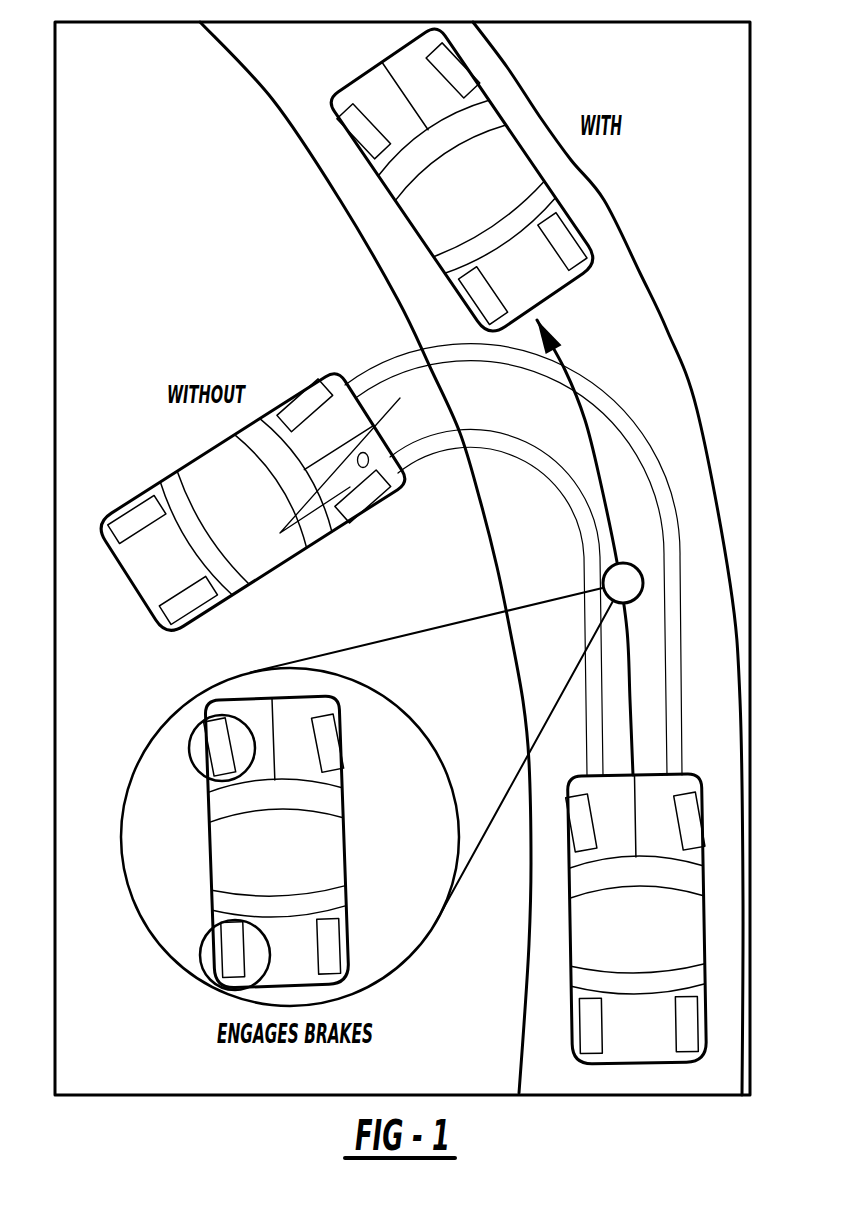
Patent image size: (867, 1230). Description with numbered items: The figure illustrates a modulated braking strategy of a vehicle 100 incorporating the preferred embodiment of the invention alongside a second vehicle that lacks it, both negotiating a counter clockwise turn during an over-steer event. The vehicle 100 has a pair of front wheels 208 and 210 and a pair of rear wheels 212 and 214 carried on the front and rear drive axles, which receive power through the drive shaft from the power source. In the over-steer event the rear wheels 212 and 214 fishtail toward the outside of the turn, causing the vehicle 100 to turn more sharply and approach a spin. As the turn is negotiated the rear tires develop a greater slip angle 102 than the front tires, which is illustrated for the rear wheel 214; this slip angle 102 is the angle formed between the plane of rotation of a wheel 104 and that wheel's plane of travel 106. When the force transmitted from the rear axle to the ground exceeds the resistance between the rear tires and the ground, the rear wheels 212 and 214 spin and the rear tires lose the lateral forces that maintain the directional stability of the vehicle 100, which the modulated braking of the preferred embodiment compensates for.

The vehicle 100 is at (735, 929).
The slip angle 102 is at (365, 448).
The plane of rotation of a wheel 104 is at (408, 452).
The plane of travel of a wheel 106 is at (308, 500).
The front wheel 208 is at (582, 818).
The front wheel 210 is at (688, 808).
The rear wheel 212 is at (697, 1027).
The rear wheel 214 is at (583, 1030).